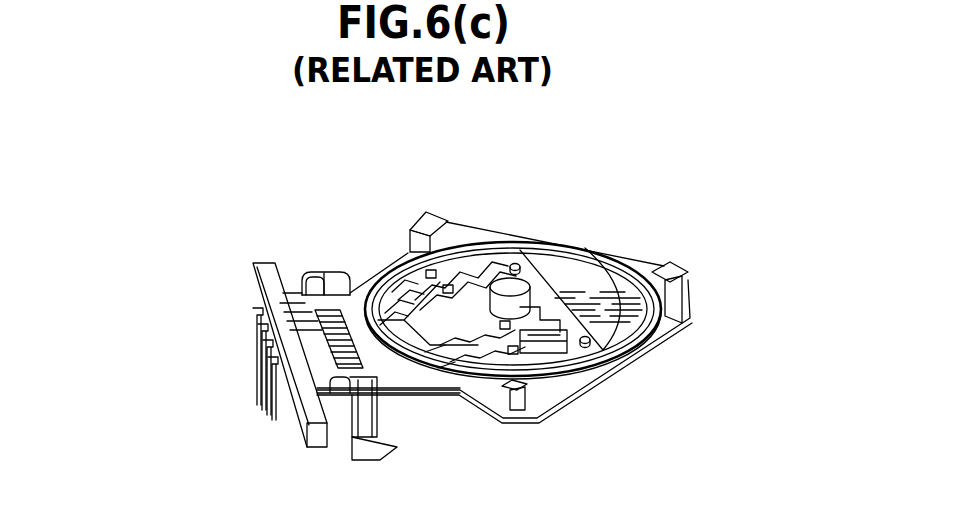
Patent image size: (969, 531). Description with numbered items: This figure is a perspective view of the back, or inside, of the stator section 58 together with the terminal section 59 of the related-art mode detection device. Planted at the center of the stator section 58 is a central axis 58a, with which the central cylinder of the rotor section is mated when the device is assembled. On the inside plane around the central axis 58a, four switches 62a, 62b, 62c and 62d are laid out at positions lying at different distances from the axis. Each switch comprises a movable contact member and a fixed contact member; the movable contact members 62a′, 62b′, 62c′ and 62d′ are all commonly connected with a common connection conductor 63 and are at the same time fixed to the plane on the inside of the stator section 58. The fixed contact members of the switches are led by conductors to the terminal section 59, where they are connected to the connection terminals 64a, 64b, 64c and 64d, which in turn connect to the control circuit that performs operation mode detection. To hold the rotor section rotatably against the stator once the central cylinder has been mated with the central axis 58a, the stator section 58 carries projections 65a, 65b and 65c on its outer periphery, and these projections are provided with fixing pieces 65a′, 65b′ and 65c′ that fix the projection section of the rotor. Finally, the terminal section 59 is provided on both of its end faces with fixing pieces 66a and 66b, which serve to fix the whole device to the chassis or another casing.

The stator section 58 is at (594, 232).
The central axis 58a is at (578, 250).
The terminal section 59 is at (288, 306).
The switch 62a is at (450, 272).
The movable contact member 62a′ is at (395, 290).
The switch 62b is at (505, 262).
The movable contact member 62b′ is at (405, 288).
The switch 62c is at (568, 360).
The movable contact member 62c′ is at (530, 388).
The switch 62d is at (592, 350).
The movable contact member 62d′ is at (545, 368).
The common connection conductor 63 is at (660, 280).
The connection terminal 64a is at (253, 312).
The connection terminal 64b is at (258, 328).
The connection terminal 64c is at (262, 347).
The connection terminal 64d is at (265, 367).
The projection 65a is at (535, 410).
The fixing piece 65a′ is at (517, 398).
The projection 65b is at (688, 312).
The fixing piece 65b′ is at (682, 273).
The projection 65c is at (457, 235).
The fixing piece 65c′ is at (430, 208).
The fixing piece 66a is at (328, 272).
The fixing piece 66b is at (362, 425).